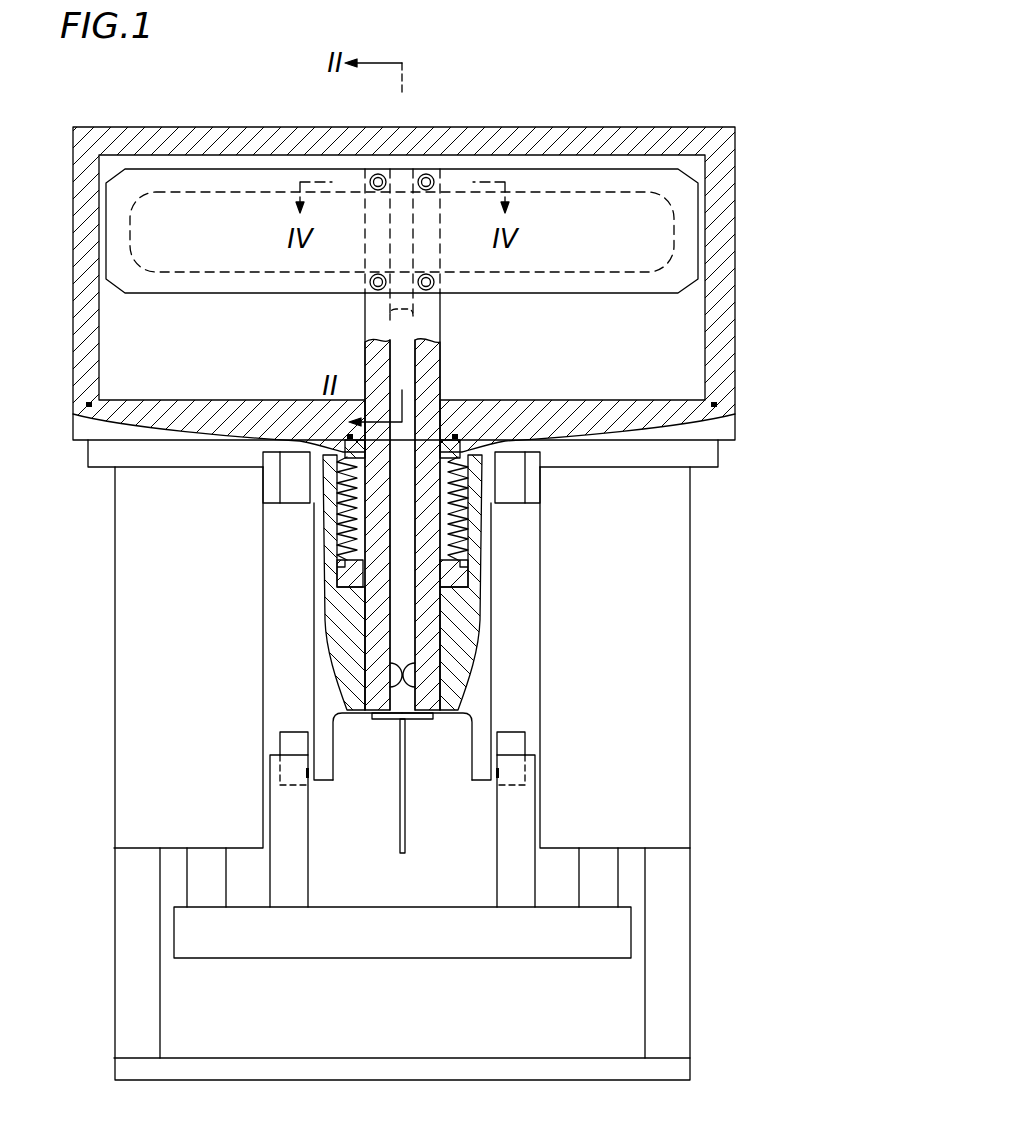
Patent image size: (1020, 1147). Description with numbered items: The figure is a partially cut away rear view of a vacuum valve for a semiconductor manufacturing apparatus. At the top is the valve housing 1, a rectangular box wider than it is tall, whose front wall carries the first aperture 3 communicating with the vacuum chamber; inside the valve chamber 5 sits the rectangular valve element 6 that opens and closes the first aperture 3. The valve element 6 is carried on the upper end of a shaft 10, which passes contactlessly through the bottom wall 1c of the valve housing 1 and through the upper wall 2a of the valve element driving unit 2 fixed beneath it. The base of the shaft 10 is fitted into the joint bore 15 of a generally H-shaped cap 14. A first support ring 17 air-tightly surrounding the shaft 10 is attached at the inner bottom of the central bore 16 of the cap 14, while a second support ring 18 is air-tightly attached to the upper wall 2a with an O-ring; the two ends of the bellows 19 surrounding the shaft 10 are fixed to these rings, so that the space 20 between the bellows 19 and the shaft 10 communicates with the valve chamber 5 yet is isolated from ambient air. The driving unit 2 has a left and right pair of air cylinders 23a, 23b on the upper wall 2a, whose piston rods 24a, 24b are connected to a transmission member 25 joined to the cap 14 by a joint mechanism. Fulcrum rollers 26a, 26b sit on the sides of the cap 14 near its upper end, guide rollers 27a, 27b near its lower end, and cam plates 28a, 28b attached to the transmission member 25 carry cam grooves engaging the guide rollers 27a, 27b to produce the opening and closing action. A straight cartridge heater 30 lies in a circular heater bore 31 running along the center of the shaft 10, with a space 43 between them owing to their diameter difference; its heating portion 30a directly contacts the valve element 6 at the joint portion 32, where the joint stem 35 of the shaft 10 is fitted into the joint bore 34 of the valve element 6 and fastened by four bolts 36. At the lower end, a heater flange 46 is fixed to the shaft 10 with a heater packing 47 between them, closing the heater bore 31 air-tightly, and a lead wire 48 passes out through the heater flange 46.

The valve housing 1 is at (606, 108).
The bottom wall 1c is at (698, 410).
The valve element driving unit 2 is at (711, 593).
The upper wall of the driving unit 2a is at (695, 457).
The first aperture 3 is at (648, 224).
The valve chamber 5 is at (594, 362).
The valve element 6 is at (185, 282).
The shaft 10 is at (372, 325).
The cap 14 is at (478, 668).
The joint bore 15 is at (447, 692).
The central bore 16 is at (340, 520).
The first support ring 17 is at (327, 603).
The second support ring 18 is at (456, 442).
The bellows 19 is at (333, 548).
The space 20 is at (445, 527).
The air cylinder 23a is at (655, 640).
The air cylinder 23b is at (160, 650).
The piston rod 24a is at (600, 890).
The piston rod 24b is at (205, 880).
The transmission member 25 is at (456, 935).
The fulcrum roller 26a is at (510, 487).
The fulcrum roller 26b is at (292, 490).
The guide roller 27a is at (510, 748).
The guide roller 27b is at (295, 745).
The cam plate 28a is at (512, 828).
The cam plate 28b is at (290, 805).
The cartridge heater 30 is at (410, 362).
The heating portion 30a is at (420, 210).
The heater bore 31 is at (380, 688).
The joint portion 32 is at (360, 188).
The joint bore 34 is at (377, 174).
The joint stem 35 is at (428, 252).
The bolts 36 is at (426, 174).
The space 43 is at (416, 613).
The heater flange 46 is at (422, 722).
The heater packing 47 is at (383, 722).
The lead wire 48 is at (407, 828).